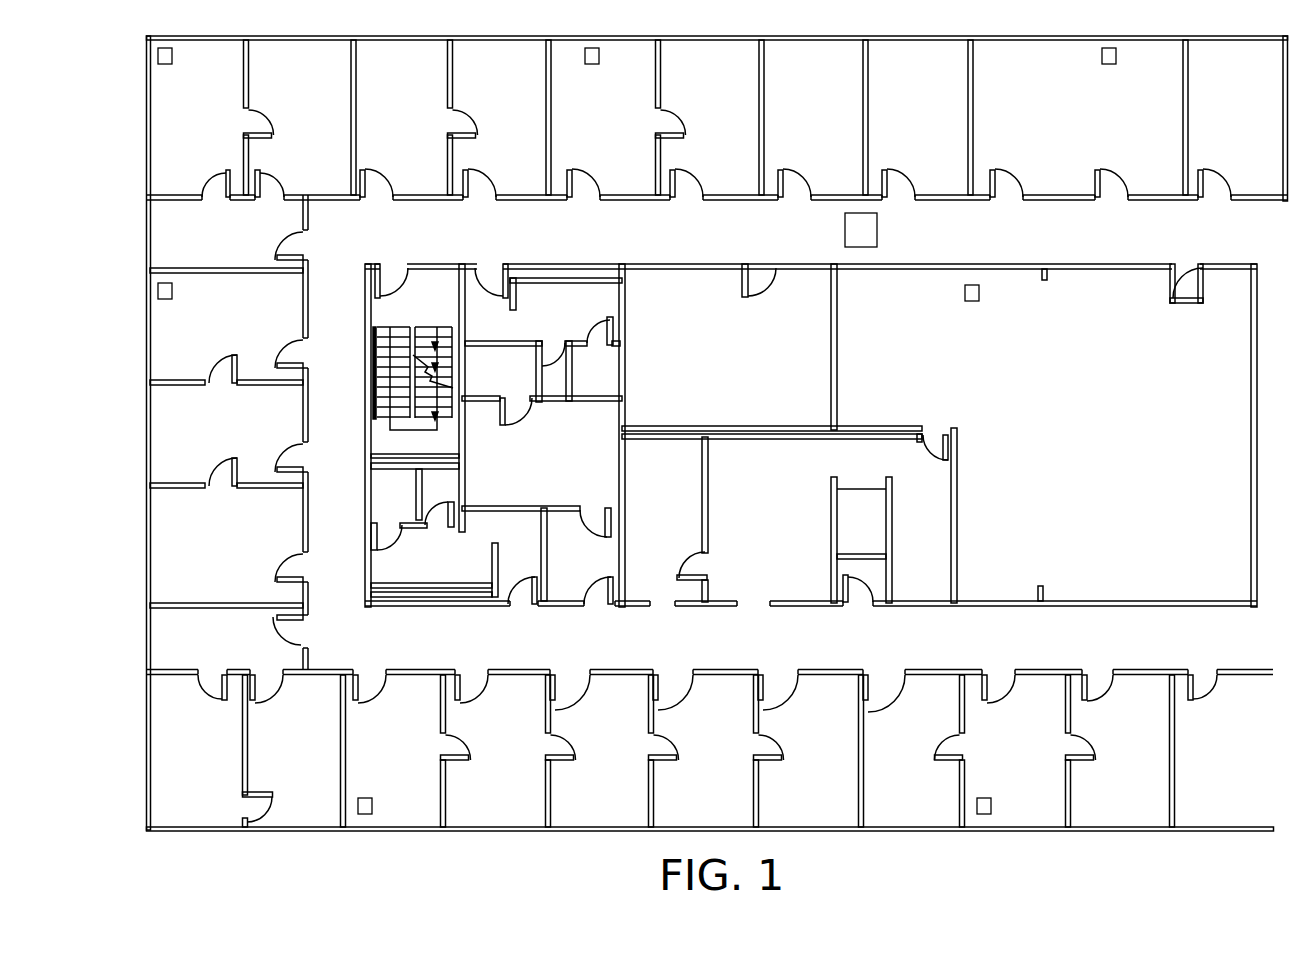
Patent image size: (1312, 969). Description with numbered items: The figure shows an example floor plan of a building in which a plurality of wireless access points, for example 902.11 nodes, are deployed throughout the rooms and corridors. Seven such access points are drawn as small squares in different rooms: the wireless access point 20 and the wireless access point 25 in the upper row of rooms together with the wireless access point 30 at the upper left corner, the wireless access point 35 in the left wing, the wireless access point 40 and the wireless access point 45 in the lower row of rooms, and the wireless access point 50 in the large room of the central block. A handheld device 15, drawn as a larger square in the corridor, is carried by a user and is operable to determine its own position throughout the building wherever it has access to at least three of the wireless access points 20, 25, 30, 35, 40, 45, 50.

The handheld device 15 is at (877, 228).
The wireless access point 20 is at (1116, 56).
The wireless access point 25 is at (599, 56).
The wireless access point 30 is at (172, 56).
The wireless access point 35 is at (172, 291).
The wireless access point 40 is at (372, 806).
The wireless access point 45 is at (991, 806).
The wireless access point 50 is at (979, 292).